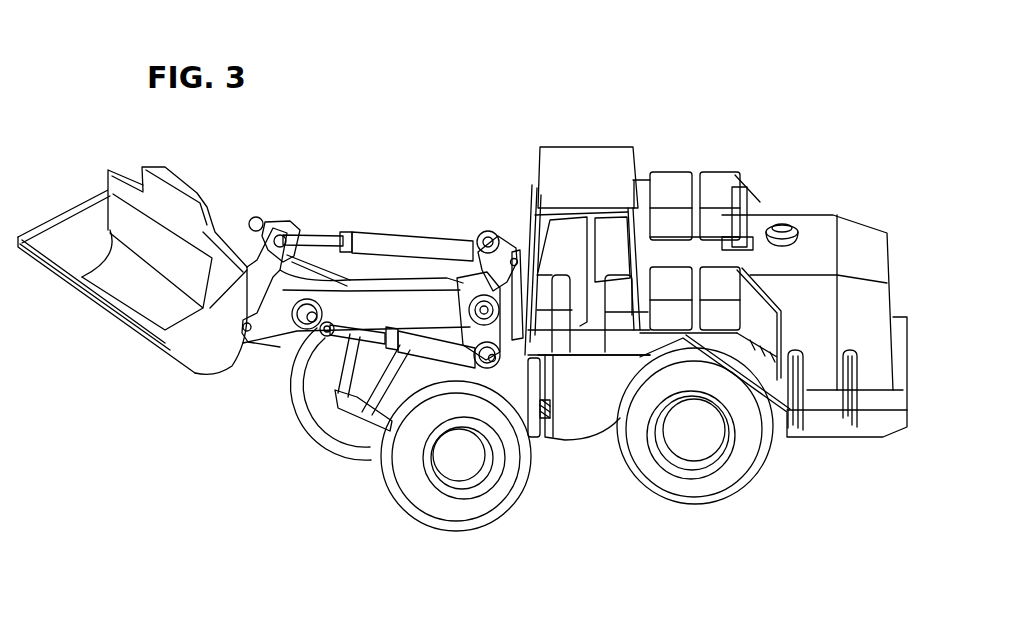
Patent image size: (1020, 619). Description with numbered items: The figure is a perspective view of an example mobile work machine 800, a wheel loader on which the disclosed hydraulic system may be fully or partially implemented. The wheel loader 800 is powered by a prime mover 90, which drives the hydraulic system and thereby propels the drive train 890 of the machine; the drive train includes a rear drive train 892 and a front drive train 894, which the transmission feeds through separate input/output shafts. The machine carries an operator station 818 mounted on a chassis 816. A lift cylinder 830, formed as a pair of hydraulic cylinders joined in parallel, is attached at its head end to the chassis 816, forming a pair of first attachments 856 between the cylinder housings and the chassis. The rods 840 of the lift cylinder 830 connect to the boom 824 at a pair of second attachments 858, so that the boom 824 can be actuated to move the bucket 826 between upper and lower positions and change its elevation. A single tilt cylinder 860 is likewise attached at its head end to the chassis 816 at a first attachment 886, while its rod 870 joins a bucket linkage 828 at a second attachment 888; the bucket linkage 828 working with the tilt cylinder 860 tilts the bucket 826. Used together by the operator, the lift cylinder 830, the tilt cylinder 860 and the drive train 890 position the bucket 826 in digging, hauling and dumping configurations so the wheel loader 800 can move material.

The mobile work machine 800 is at (604, 54).
The operator station 818 is at (594, 162).
The prime mover 90 is at (788, 226).
The chassis 816 is at (585, 430).
The first attachments 856 is at (527, 420).
The rear drive train 892 is at (707, 438).
The drive train 890 is at (457, 477).
The front drive train 894 is at (473, 466).
The bucket 826 is at (140, 334).
The boom 824 is at (277, 330).
The second attachment 888 is at (272, 228).
The bucket linkage 828 is at (283, 256).
The rod 870 is at (315, 236).
The tilt cylinder 860 is at (393, 243).
The first attachment 886 is at (491, 233).
The second attachments 858 is at (297, 330).
The rods 840 is at (314, 335).
The lift cylinder 830 is at (387, 350).